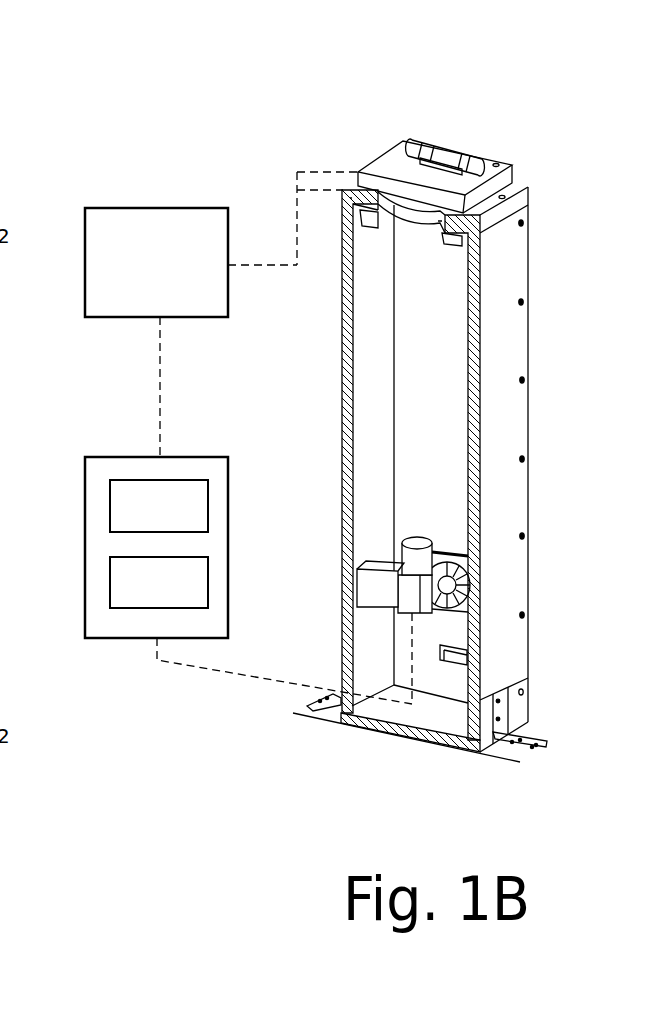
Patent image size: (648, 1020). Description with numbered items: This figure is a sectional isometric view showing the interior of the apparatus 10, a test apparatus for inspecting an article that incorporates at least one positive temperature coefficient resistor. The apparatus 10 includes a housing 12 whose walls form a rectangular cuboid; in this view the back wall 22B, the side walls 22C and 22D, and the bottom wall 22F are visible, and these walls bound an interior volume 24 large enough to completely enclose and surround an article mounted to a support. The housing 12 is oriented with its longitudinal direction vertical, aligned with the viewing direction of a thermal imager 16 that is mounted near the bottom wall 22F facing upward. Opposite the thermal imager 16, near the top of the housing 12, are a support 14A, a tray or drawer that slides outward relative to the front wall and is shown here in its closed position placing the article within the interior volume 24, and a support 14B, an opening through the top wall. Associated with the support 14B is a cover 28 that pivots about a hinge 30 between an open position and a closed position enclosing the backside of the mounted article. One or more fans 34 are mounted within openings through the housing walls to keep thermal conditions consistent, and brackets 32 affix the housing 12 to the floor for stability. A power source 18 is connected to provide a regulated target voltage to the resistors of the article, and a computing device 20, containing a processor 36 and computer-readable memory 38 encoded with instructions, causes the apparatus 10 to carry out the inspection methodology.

The apparatus 10 is at (578, 114).
The housing 12 is at (549, 252).
The support 14A is at (410, 487).
The support 14B is at (355, 180).
The thermal imager 16 is at (403, 548).
The power source 18 is at (175, 297).
The computing device 20 is at (85, 505).
The back wall 22B is at (412, 338).
The side wall 22C is at (502, 348).
The side wall 22D is at (342, 403).
The bottom wall 22F is at (407, 730).
The interior volume 24 is at (442, 411).
The cover 28 is at (398, 173).
The hinge 30 is at (447, 148).
The bracket 32 is at (520, 737).
The fan 34 is at (445, 550).
The processor 36 is at (174, 514).
The computer-readable memory 38 is at (174, 592).